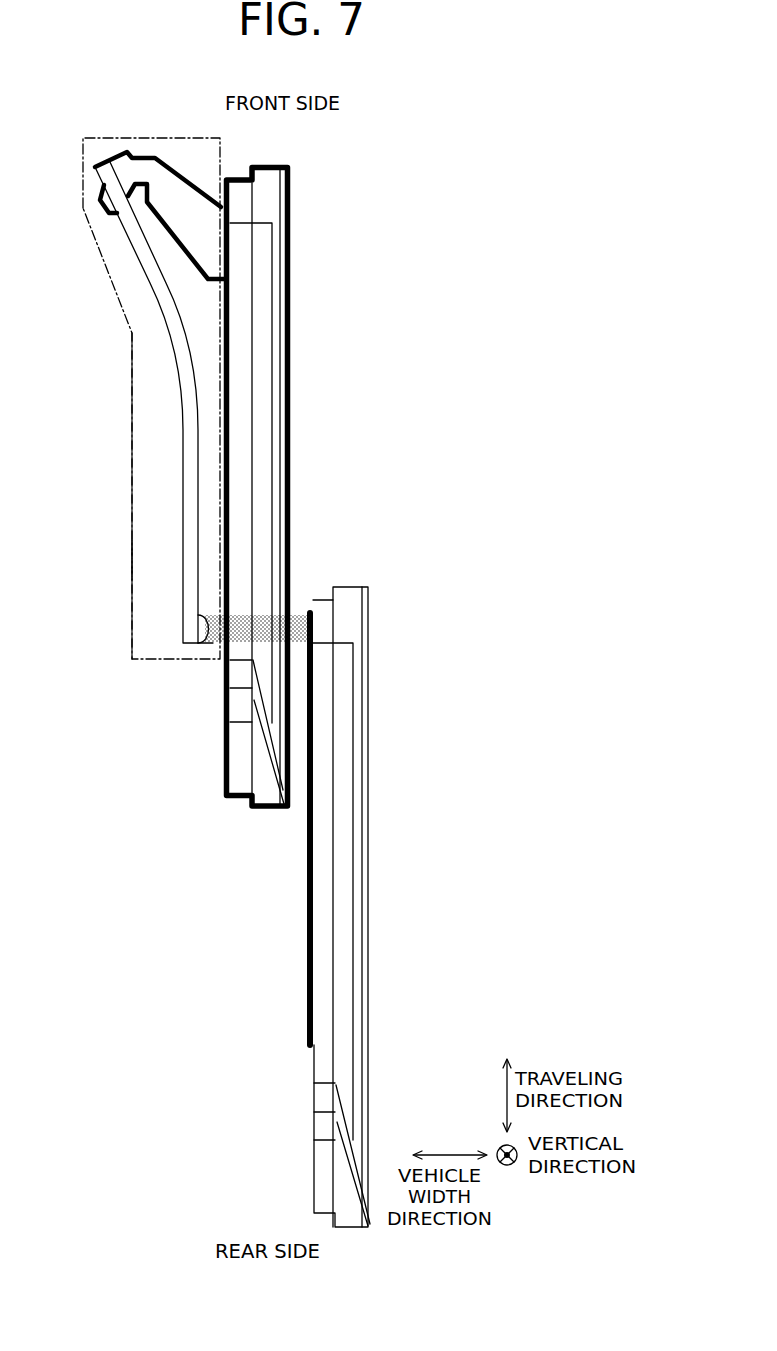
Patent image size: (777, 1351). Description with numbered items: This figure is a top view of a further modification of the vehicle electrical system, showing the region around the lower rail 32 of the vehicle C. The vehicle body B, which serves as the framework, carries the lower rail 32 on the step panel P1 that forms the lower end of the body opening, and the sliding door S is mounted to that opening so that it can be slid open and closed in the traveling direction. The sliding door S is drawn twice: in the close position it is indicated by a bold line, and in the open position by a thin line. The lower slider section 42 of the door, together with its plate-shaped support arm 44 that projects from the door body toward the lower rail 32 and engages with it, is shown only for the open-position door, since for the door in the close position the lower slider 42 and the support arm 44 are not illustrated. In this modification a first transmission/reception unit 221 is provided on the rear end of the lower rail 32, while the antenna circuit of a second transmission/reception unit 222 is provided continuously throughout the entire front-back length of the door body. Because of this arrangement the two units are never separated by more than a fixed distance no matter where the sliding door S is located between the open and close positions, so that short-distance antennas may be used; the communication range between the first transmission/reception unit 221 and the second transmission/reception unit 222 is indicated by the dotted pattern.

The lower slider section 42 is at (153, 170).
The support arm 44 is at (103, 202).
The lower rail 32 is at (186, 479).
The second transmission/reception unit 222 is at (222, 362).
The first transmission/reception unit 221 is at (205, 632).
The sliding door S is at (290, 192).
The step panel P1 is at (155, 558).
The vehicle body B is at (130, 603).
The vehicle C is at (128, 637).